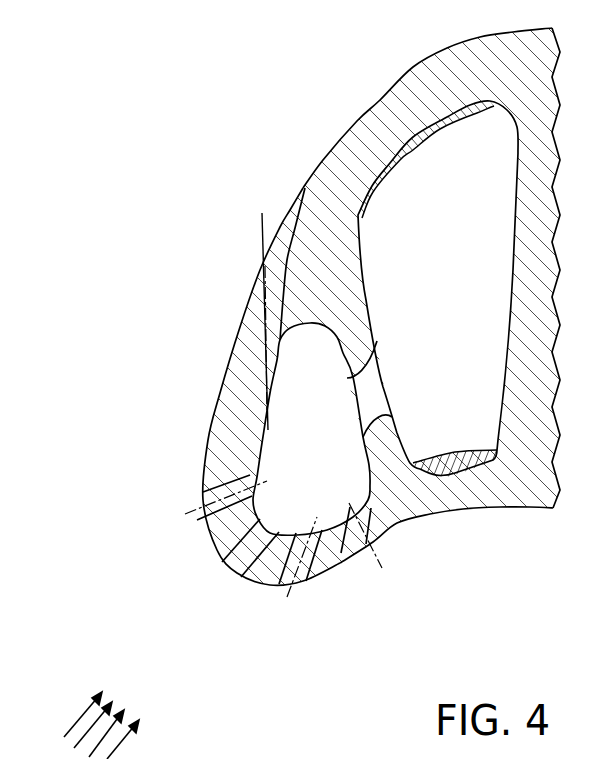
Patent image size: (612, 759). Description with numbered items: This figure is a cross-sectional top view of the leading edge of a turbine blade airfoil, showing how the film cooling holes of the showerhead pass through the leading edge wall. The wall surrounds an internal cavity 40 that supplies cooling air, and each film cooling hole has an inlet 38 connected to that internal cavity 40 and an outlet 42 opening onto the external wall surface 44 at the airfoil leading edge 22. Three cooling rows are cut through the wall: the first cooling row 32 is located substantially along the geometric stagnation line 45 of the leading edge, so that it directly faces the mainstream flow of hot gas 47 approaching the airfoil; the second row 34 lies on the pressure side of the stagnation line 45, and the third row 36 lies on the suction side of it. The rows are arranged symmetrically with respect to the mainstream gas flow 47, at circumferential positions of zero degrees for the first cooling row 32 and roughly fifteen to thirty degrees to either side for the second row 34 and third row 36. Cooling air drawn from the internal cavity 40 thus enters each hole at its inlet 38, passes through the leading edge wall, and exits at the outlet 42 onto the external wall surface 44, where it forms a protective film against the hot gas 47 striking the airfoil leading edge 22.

The airfoil leading edge 22 is at (190, 603).
The first cooling row 32 is at (237, 578).
The second row 34 is at (300, 586).
The third row 36 is at (203, 492).
The inlet 38 is at (263, 480).
The internal cavity 40 is at (328, 444).
The outlet 42 is at (205, 517).
The external wall surface 44 is at (260, 588).
The geometric stagnation line 45 is at (230, 577).
The mainstream flow of hot gas 47 is at (77, 723).